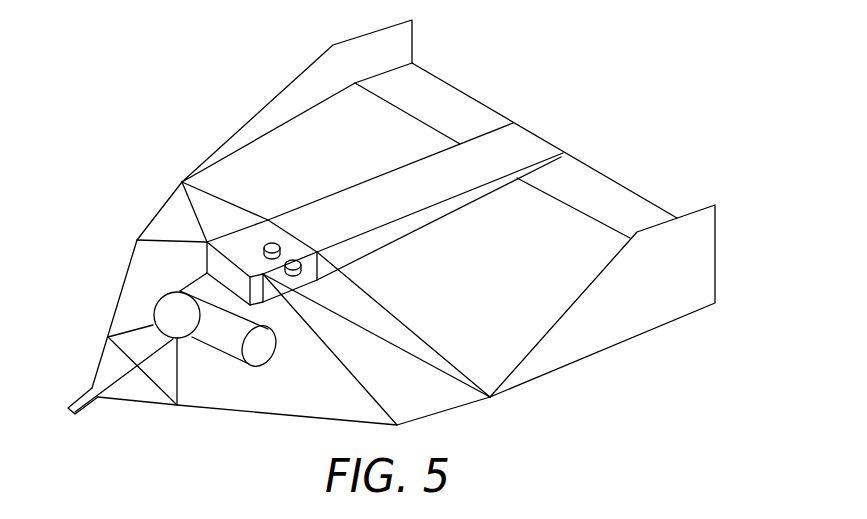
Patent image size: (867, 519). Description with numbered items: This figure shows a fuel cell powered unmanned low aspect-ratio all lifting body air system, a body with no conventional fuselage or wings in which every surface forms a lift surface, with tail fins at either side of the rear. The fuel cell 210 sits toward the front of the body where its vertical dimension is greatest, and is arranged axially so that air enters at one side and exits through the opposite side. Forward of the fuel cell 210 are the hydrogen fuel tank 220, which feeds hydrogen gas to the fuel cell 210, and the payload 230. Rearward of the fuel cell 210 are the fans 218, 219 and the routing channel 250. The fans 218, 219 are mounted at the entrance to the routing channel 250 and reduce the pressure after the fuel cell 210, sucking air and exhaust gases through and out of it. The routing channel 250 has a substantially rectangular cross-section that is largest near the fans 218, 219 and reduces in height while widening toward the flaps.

The fuel cell 210 is at (213, 263).
The fan 218 is at (268, 247).
The fan 219 is at (289, 262).
The hydrogen fuel tank 220 is at (227, 348).
The payload 230 is at (162, 312).
The routing channel 250 is at (408, 205).